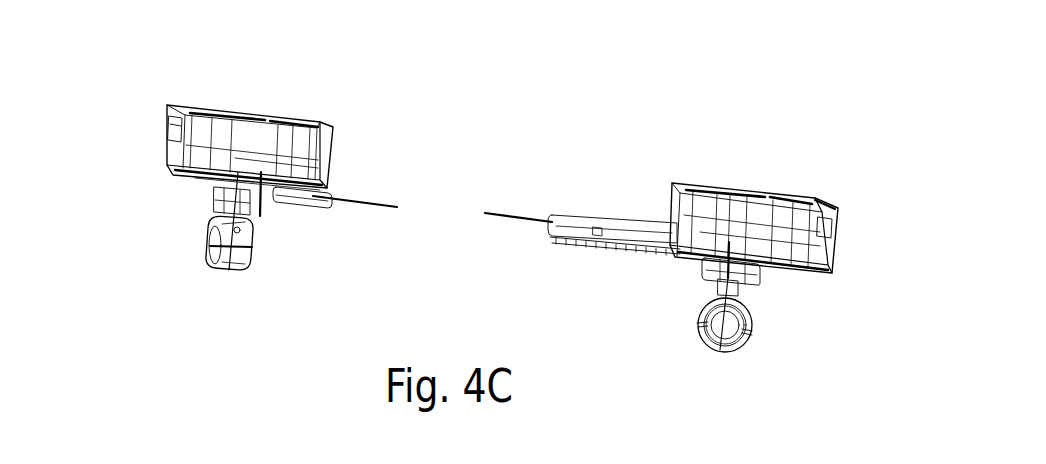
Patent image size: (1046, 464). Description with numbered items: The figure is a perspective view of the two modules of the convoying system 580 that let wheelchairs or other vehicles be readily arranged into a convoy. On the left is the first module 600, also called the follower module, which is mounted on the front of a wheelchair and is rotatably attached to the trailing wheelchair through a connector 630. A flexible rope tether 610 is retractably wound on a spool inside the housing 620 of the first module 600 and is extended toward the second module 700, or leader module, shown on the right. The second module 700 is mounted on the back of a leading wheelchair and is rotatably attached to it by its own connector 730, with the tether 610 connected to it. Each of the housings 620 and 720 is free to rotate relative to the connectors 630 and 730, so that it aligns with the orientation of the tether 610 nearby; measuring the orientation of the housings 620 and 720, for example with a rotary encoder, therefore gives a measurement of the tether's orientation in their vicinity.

The convoying system 580 is at (577, 73).
The first module 600 is at (170, 83).
The rope tether 610 is at (363, 197).
The housing 620 is at (215, 106).
The connector 630 is at (200, 270).
The second module 700 is at (800, 180).
The housing 720 is at (760, 187).
The connector 730 is at (748, 345).